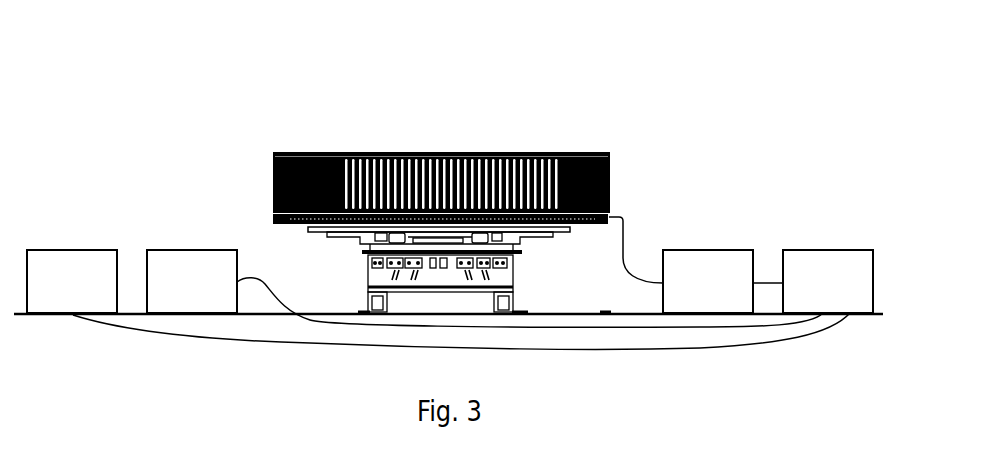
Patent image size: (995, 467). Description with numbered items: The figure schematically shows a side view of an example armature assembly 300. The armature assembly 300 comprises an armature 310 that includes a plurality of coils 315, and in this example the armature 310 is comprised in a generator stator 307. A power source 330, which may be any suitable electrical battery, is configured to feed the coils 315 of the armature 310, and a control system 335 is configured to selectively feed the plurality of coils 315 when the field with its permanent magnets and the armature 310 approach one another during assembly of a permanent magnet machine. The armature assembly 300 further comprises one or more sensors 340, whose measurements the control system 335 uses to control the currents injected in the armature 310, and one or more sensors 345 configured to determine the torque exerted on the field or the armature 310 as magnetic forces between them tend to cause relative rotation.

The armature assembly 300 is at (638, 82).
The generator stator 307 is at (455, 142).
The armature 310 is at (318, 152).
The coils 315 is at (610, 183).
The power source 330 is at (733, 294).
The control system 335 is at (853, 294).
The sensors 340 is at (97, 294).
The sensors 345 is at (217, 294).